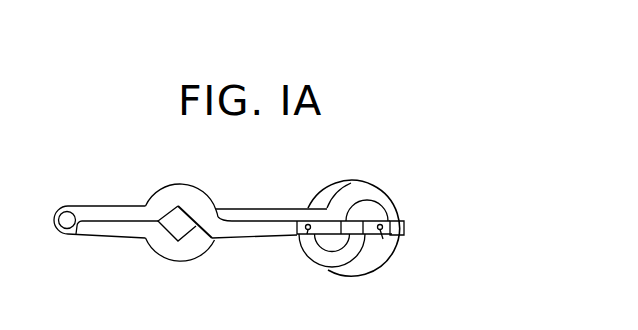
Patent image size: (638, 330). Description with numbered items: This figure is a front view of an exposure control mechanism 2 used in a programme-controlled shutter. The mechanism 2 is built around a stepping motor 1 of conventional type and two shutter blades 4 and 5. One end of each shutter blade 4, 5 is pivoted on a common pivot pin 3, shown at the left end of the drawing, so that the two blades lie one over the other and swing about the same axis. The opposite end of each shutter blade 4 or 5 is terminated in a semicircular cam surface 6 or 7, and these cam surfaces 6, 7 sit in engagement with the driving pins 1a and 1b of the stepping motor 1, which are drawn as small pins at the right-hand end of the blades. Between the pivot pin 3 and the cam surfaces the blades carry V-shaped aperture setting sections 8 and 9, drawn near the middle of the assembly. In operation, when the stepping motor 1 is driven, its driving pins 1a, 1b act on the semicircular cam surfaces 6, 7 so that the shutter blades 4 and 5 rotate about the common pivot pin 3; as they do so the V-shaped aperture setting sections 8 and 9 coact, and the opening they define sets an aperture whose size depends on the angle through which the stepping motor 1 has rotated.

The stepping motor 1 is at (342, 184).
The driving pin 1a is at (302, 244).
The driving pin 1b is at (383, 240).
The exposure control mechanism 2 is at (426, 210).
The common pivot pin 3 is at (68, 226).
The shutter blade 4 is at (240, 240).
The shutter blade 5 is at (265, 207).
The semicircular cam surface 6 is at (322, 252).
The semicircular cam surface 7 is at (382, 200).
The V-shaped aperture setting section 8 is at (169, 228).
The V-shaped aperture setting section 9 is at (178, 206).